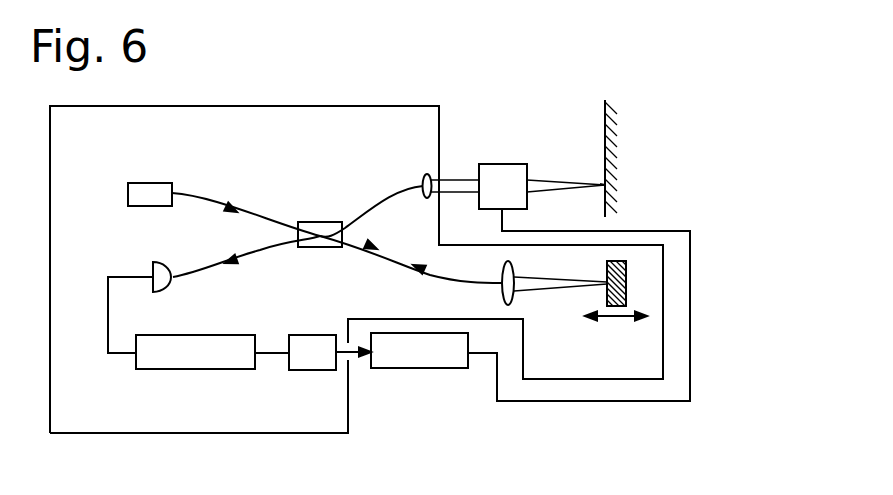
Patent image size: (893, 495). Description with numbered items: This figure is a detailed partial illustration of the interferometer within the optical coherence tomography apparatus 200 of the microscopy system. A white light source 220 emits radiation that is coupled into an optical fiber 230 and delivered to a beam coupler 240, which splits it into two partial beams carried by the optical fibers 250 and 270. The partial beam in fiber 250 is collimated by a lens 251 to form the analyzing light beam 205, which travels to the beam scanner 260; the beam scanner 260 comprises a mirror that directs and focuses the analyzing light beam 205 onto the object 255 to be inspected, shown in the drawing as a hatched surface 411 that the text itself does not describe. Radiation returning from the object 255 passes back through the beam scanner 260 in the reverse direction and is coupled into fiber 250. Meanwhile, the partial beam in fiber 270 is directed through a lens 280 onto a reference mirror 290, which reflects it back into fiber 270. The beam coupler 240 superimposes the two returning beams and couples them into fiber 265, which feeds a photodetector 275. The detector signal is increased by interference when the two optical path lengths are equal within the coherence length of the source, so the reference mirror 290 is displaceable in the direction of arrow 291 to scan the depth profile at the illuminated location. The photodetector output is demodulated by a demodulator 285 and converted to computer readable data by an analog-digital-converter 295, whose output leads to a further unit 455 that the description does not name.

The optical coherence tomography apparatus 200 is at (313, 105).
The white light source 220 is at (154, 183).
The optical fiber 230 is at (205, 197).
The beam coupler 240 is at (319, 250).
The optical fiber 250 is at (377, 200).
The lens 251 is at (423, 175).
The analyzing light beam 205 is at (457, 178).
The beam scanner 260 is at (502, 163).
The target wall surface 411 is at (603, 110).
The object 255 is at (615, 167).
The fiber 265 is at (252, 252).
The optical fiber 270 is at (395, 260).
The photodetector 275 is at (155, 267).
The lens 280 is at (497, 293).
The reference mirror 290 is at (605, 265).
The arrow 291 is at (616, 322).
The demodulator 285 is at (195, 372).
The analog-digital-converter 295 is at (312, 370).
The actuator drive unit 455 is at (413, 370).